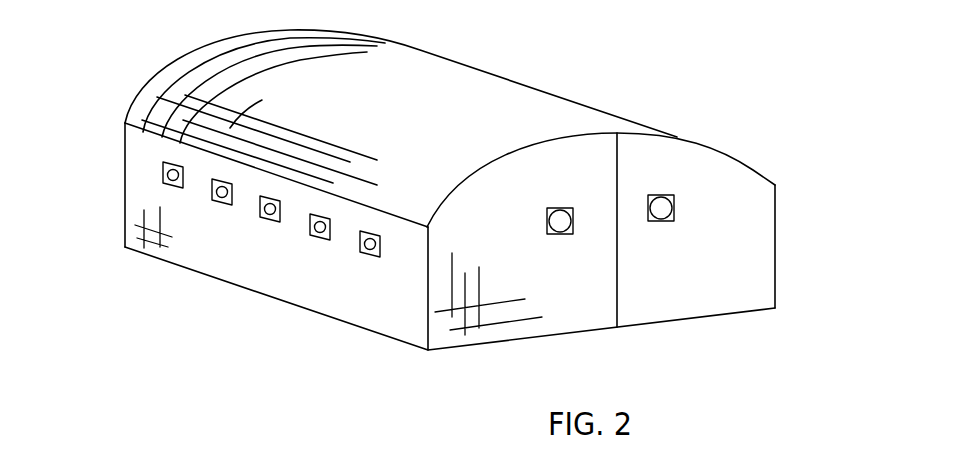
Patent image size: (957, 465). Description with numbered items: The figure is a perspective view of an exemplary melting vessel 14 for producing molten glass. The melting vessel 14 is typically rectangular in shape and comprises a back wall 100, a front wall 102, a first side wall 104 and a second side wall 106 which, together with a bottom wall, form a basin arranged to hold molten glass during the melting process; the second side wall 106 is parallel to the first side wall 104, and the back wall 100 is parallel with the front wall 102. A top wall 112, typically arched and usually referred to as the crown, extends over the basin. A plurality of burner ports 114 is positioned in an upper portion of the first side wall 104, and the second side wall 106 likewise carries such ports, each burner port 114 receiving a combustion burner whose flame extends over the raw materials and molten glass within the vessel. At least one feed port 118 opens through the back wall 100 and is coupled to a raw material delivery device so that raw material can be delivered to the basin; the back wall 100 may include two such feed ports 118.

The melting vessel 14 is at (667, 97).
The back wall 100 is at (717, 297).
The front wall 102 is at (116, 147).
The first side wall 104 is at (401, 314).
The second side wall 106 is at (779, 218).
The top wall 112 is at (533, 100).
The burner ports 114 is at (170, 187).
The feed port 118 is at (562, 236).